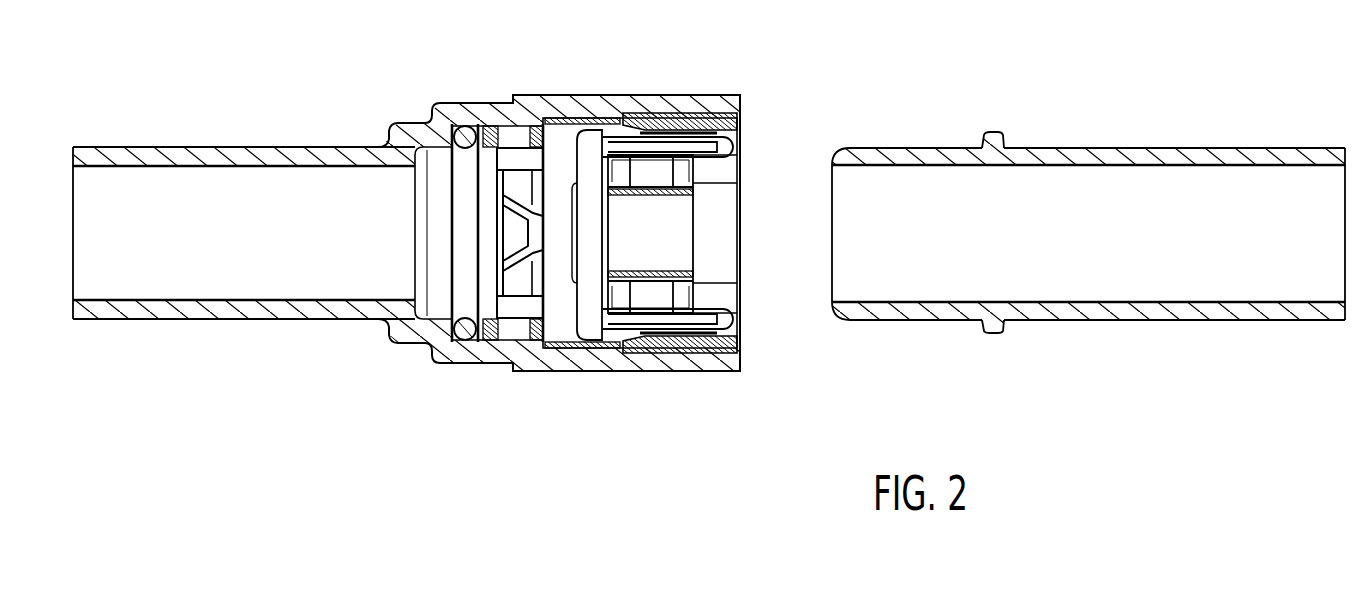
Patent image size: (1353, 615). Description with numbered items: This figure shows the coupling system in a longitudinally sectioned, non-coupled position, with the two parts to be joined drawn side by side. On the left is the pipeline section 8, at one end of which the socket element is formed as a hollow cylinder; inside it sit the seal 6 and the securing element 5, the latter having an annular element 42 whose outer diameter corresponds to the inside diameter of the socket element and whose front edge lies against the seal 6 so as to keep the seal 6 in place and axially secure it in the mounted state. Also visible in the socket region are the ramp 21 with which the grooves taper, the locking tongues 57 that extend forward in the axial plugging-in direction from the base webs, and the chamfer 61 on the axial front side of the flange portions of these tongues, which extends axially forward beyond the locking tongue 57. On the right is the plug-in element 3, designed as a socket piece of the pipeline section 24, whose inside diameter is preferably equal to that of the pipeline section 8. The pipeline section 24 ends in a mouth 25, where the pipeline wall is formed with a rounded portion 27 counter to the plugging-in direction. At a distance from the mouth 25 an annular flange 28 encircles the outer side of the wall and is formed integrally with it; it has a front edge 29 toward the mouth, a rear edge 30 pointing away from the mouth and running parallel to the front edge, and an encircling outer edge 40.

The plug-in element 3 is at (1146, 142).
The securing element 5 is at (519, 158).
The seal 6 is at (463, 126).
The pipeline section 8 is at (162, 147).
The ramp 21 is at (617, 104).
The pipeline section 24 is at (1272, 148).
The mouth 25 is at (831, 303).
The rounded portion 27 is at (839, 150).
The annular flange 28 is at (990, 333).
The front edge 29 is at (980, 146).
The rear edge 30 is at (1005, 136).
The encircling outer edge 40 is at (995, 131).
The annular element 42 is at (482, 342).
The locking tongue 57 is at (678, 123).
The chamfer 61 is at (612, 124).